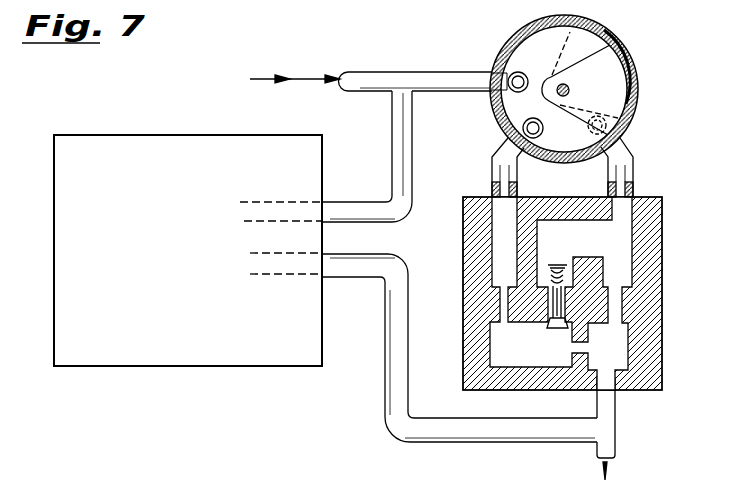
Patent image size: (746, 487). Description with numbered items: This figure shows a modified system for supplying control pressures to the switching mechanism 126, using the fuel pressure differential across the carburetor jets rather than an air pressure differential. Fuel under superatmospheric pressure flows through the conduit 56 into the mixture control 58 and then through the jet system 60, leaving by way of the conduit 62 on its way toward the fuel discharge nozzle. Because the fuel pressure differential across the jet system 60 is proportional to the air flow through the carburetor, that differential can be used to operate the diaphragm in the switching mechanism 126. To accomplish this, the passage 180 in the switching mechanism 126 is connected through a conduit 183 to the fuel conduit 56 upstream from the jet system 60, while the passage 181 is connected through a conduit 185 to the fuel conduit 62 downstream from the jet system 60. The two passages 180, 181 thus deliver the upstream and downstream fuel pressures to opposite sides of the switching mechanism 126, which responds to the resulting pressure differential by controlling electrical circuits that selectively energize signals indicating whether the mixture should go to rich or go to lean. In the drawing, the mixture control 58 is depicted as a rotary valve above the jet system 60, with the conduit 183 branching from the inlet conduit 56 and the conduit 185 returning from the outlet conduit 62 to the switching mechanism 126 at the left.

The conduit 56 is at (417, 73).
The mixture control 58 is at (640, 58).
The jet system 60 is at (664, 238).
The conduit 62 is at (612, 435).
The switching mechanism 126 is at (148, 251).
The passage 180 is at (300, 206).
The passage 181 is at (305, 272).
The conduit 183 is at (404, 166).
The conduit 185 is at (395, 340).